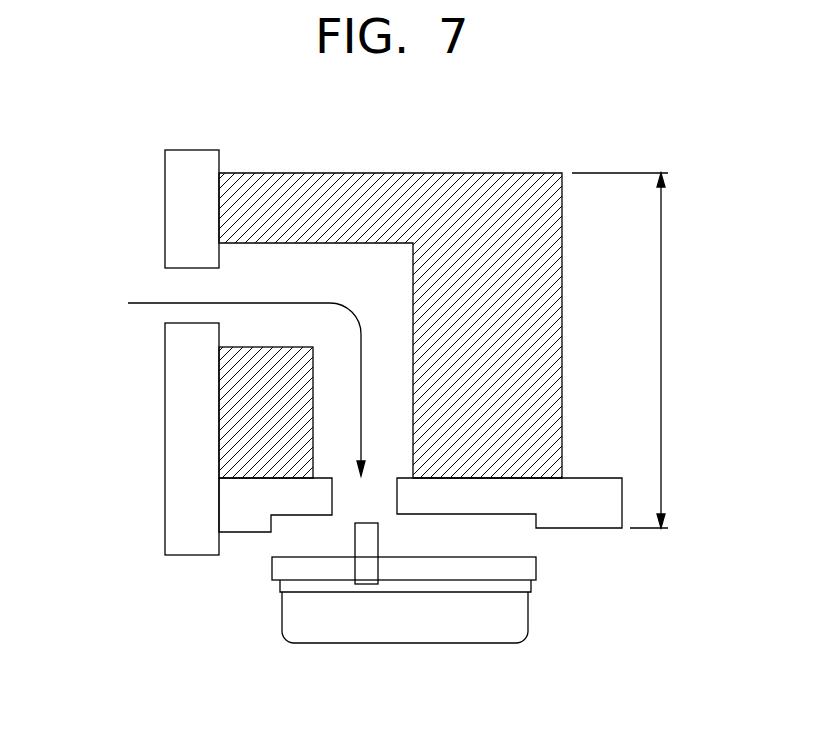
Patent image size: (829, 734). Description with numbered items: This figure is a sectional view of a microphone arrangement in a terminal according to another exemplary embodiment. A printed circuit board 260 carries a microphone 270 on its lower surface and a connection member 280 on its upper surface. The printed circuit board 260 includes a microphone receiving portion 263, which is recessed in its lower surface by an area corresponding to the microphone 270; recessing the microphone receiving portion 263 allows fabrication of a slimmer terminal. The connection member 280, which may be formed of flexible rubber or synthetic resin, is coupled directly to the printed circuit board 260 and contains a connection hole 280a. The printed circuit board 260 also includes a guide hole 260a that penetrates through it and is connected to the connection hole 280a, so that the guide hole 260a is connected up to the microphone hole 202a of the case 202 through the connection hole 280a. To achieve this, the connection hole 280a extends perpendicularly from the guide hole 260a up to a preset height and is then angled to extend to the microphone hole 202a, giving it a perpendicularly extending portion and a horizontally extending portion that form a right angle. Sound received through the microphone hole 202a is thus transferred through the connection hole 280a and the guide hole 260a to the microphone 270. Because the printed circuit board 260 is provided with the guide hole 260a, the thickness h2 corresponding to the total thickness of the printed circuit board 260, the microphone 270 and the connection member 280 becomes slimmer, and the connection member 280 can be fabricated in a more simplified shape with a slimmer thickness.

The case 202 is at (182, 437).
The microphone hole 202a is at (176, 286).
The printed circuit board 260 is at (593, 515).
The guide hole 260a is at (339, 503).
The microphone receiving portion 263 is at (298, 515).
The microphone 270 is at (487, 626).
The connection member 280 is at (548, 302).
The connection hole 280a is at (363, 274).
The thickness h2 is at (630, 350).